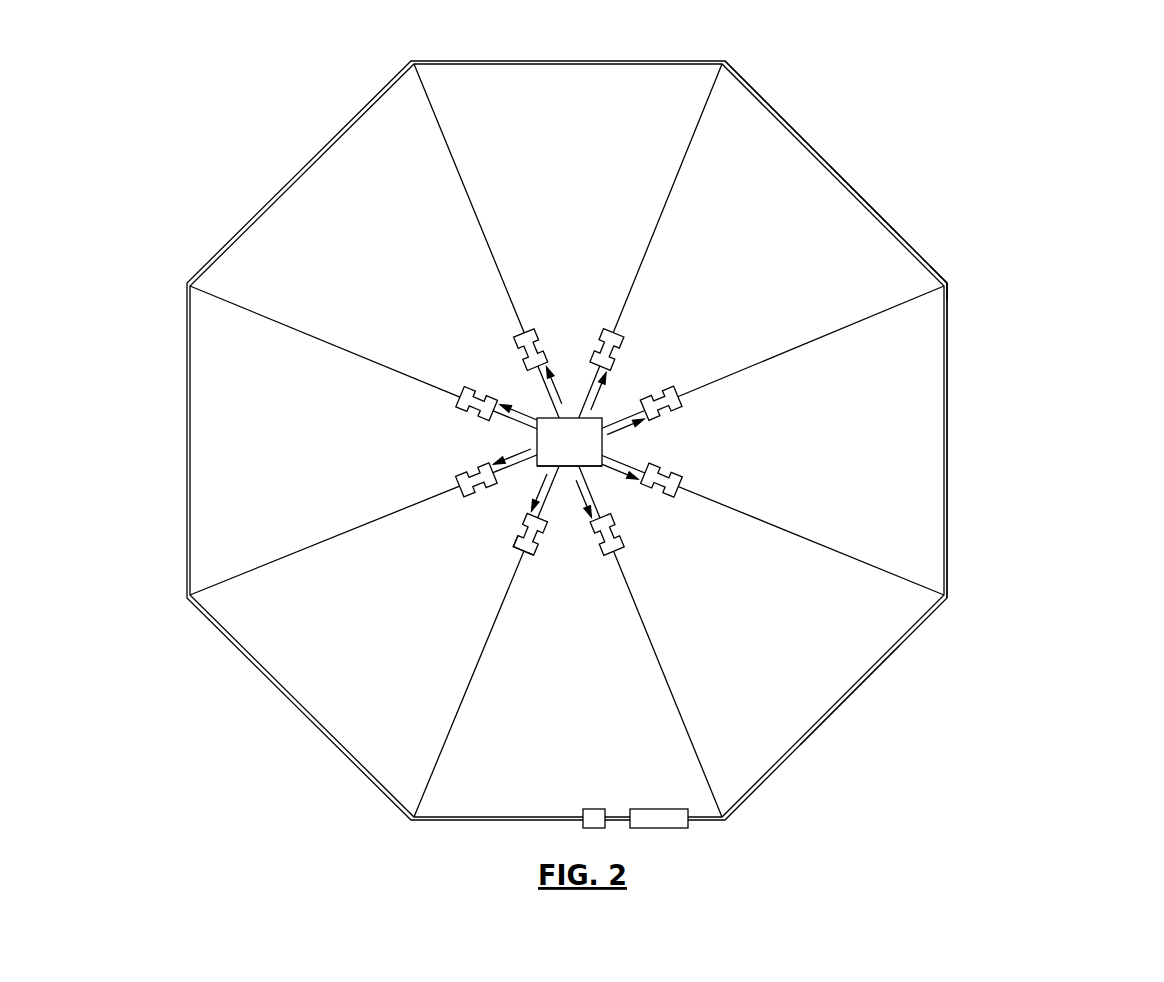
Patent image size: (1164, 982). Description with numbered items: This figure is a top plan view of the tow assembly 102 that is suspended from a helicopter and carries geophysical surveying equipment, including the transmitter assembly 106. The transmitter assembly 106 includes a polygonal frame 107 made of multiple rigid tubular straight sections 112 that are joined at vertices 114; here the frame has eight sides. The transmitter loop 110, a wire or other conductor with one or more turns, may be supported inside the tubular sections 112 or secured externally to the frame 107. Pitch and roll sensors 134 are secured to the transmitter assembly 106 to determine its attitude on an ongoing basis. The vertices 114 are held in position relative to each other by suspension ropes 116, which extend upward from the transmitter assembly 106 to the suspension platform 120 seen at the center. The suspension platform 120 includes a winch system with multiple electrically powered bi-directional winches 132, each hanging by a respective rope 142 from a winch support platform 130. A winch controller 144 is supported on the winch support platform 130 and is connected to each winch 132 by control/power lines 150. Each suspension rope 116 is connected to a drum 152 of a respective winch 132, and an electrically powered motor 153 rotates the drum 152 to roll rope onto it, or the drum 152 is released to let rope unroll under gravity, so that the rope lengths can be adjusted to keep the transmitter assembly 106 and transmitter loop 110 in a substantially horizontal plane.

The tow assembly 102 is at (1033, 350).
The transmitter assembly 106 is at (846, 698).
The polygonal frame 107 is at (880, 216).
The transmitter loop 110 is at (947, 517).
The tubular straight sections 112 is at (700, 50).
The vertices 114 is at (950, 282).
The suspension ropes 116 is at (730, 510).
The suspension platform 120 is at (557, 288).
The winch support platform 130 is at (547, 413).
The winches 132 is at (621, 352).
The pitch and roll sensors 134 is at (660, 809).
The rope 142 is at (590, 398).
The winch controller 144 is at (536, 437).
The control/power lines 150 is at (530, 377).
The drum 152 is at (530, 548).
The electrically powered motor 153 is at (515, 537).